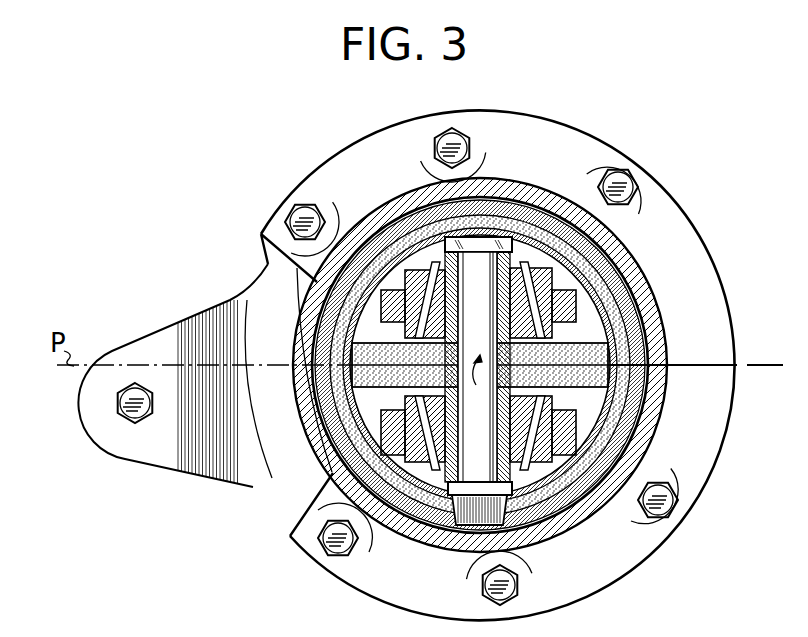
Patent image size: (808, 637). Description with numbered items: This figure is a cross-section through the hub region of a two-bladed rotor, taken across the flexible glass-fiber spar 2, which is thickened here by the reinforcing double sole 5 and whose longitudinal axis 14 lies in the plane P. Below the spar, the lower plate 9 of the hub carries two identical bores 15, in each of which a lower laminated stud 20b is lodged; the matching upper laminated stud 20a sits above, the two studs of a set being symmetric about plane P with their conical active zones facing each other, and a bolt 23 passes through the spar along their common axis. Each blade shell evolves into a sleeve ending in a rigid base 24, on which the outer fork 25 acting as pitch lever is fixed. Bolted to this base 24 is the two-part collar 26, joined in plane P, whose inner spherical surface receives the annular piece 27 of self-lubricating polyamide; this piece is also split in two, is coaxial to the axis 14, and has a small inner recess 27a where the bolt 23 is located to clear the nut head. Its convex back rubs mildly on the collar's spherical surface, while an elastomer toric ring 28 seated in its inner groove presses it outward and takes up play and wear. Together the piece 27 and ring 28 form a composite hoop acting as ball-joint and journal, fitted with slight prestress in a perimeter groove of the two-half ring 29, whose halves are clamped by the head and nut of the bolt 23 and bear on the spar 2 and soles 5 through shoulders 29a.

The spar 2 is at (612, 358).
The double sole 5 is at (318, 360).
The lower plate 9 is at (616, 440).
The longitudinal axis 14 is at (479, 367).
The bores 15 is at (405, 458).
The upper laminated stud 20a is at (537, 258).
The lower laminated stud 20b is at (541, 484).
The bolt 23 is at (487, 313).
The rigid base 24 is at (284, 419).
The outer fork 25 is at (110, 447).
The collar 26 is at (413, 207).
The annular piece 27 is at (650, 290).
The inner recess 27a is at (445, 545).
The elastic toric ring 28 is at (377, 230).
The ring 29 is at (310, 446).
The shoulders 29a is at (600, 335).